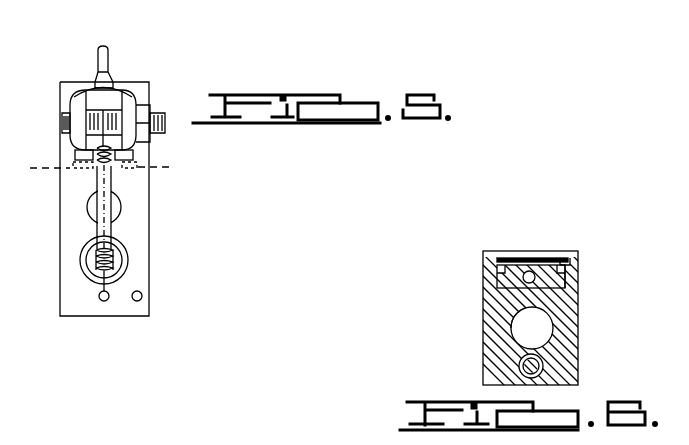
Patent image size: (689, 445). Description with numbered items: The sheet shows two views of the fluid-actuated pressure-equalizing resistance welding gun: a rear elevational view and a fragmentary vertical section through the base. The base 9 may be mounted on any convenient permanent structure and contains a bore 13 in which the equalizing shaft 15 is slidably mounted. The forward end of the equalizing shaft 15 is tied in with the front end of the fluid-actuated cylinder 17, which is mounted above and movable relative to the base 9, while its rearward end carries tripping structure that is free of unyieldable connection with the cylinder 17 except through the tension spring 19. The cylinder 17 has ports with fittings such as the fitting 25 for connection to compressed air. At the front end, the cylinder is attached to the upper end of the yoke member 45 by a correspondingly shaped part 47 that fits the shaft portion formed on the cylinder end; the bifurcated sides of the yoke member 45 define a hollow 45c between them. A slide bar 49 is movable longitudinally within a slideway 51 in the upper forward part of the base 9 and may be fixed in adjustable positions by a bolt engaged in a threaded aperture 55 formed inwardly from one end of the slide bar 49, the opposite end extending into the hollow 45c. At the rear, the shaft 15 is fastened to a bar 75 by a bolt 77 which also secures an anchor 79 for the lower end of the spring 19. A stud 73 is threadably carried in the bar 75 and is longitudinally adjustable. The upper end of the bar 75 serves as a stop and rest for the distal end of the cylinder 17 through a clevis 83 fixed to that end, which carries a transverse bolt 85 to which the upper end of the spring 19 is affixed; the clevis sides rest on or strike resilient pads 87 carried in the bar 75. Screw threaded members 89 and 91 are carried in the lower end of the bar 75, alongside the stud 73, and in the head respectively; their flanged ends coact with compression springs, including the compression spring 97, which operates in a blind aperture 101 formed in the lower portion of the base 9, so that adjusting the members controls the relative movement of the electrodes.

In FIG. 6, the base 9 is at (476, 351).
In FIG. 6, the bore 13 is at (546, 323).
In FIG. 6, the equalizing shaft 15 is at (516, 325).
In FIG. 5, the fluid-actuated cylinder 17 is at (118, 91).
In FIG. 5, the tension spring 19 is at (92, 259).
In FIG. 5, the fitting 25 is at (110, 52).
In FIG. 6, the yoke member 45 is at (559, 247).
In FIG. 6, the hollow 45c is at (569, 262).
In FIG. 5, the part 47 is at (148, 84).
In FIG. 6, the slide bar 49 is at (497, 280).
In FIG. 6, the slideway 51 is at (566, 290).
In FIG. 6, the threaded aperture 55 is at (530, 270).
In FIG. 5, the stud 73 is at (143, 296).
In FIG. 5, the bar 75 is at (145, 206).
In FIG. 5, the bolt 77 is at (113, 257).
In FIG. 5, the anchor 79 is at (118, 262).
In FIG. 5, the clevis 83 is at (93, 103).
In FIG. 5, the transverse bolt 85 is at (156, 114).
In FIG. 5, the resilient pads 87 is at (97, 167).
In FIG. 5, the screw threaded member 89 is at (107, 301).
In FIG. 6, the screw threaded member 91 is at (544, 366).
In FIG. 6, the compression spring 97 is at (542, 357).
In FIG. 6, the blind aperture 101 is at (519, 366).